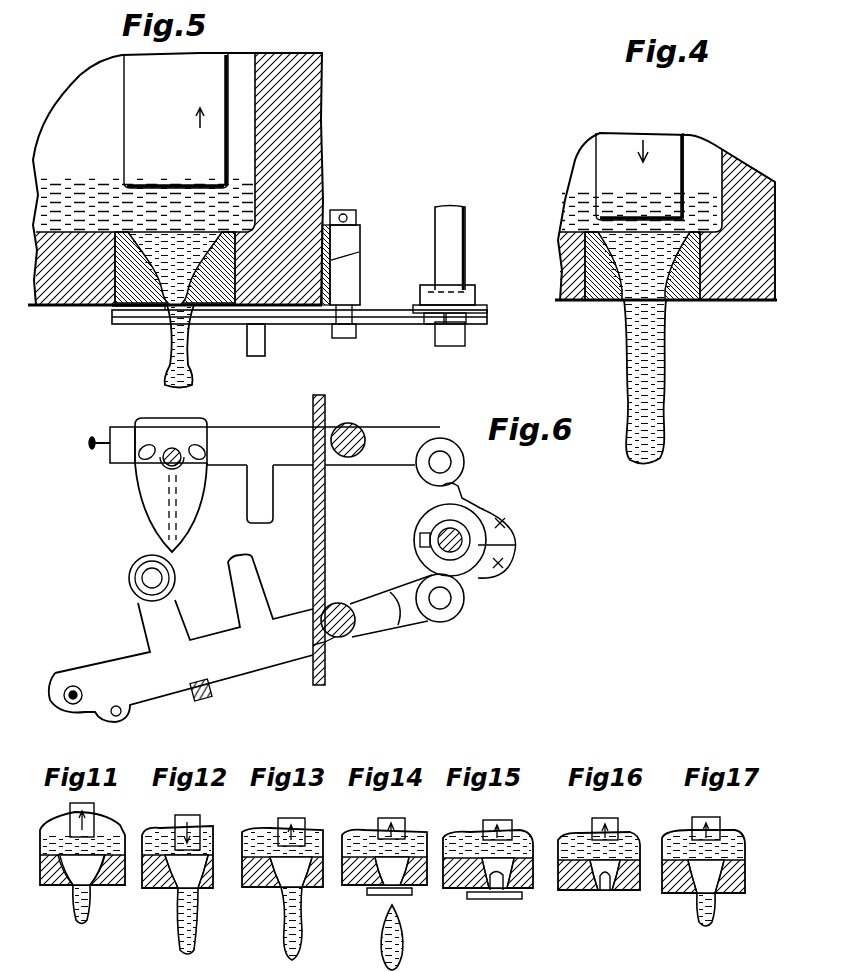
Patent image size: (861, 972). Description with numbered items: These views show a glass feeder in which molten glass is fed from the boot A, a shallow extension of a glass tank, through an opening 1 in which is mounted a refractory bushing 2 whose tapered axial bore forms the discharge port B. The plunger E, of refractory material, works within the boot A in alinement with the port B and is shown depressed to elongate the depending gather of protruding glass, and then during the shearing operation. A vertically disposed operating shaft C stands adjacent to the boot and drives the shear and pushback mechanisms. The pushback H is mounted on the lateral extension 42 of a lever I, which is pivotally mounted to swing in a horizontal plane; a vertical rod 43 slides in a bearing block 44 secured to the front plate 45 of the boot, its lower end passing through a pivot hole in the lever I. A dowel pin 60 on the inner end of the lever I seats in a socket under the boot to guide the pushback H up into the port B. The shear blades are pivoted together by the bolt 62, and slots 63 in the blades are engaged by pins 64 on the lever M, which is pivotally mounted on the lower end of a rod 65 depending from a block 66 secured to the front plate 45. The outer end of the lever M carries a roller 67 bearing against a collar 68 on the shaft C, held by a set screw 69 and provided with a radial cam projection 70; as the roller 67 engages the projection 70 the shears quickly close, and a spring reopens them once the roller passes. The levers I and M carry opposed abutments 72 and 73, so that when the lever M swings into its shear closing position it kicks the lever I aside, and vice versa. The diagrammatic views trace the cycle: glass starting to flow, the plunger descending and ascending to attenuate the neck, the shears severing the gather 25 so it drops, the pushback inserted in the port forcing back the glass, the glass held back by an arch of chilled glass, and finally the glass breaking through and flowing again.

In FIG. 4, the opening 1 is at (702, 302).
In FIG. 5, the bushing 2 is at (107, 305).
In FIG. 4, the bushing 2 is at (606, 302).
In FIG. 14, the drop of liquid 25 is at (368, 938).
In FIG. 6, the lateral extension 42 is at (180, 620).
In FIG. 6, the rod 43 is at (343, 603).
In FIG. 6, the bearing block 44 is at (350, 638).
In FIG. 5, the front plate 45 is at (326, 266).
In FIG. 6, the front plate 45 is at (325, 545).
In FIG. 6, the dowel pin 60 is at (74, 684).
In FIG. 6, the bolt 62 is at (178, 452).
In FIG. 6, the slots 63 is at (140, 462).
In FIG. 6, the pins 64 is at (208, 452).
In FIG. 5, the rod 65 is at (356, 215).
In FIG. 6, the rod 65 is at (360, 422).
In FIG. 5, the block 66 is at (360, 242).
In FIG. 6, the block 66 is at (340, 424).
In FIG. 5, the roller 67 is at (476, 298).
In FIG. 6, the roller 67 is at (466, 462).
In FIG. 6, the collar 68 is at (425, 514).
In FIG. 6, the set screw 69 is at (420, 537).
In FIG. 6, the radial cam projection 70 is at (464, 493).
In FIG. 6, the abutment 72 is at (256, 580).
In FIG. 5, the abutment 73 is at (266, 345).
In FIG. 6, the abutment 73 is at (274, 503).
In FIG. 5, the boot A is at (175, 179).
In FIG. 4, the boot A is at (575, 182).
In FIG. 4, the discharge port B is at (625, 238).
In FIG. 5, the operating shaft C is at (468, 258).
In FIG. 5, the plunger E is at (176, 121).
In FIG. 4, the plunger E is at (639, 176).
In FIG. 6, the pushback H is at (130, 588).
In FIG. 6, the lever I is at (192, 638).
In FIG. 5, the lever M is at (299, 326).
In FIG. 6, the lever M is at (287, 446).